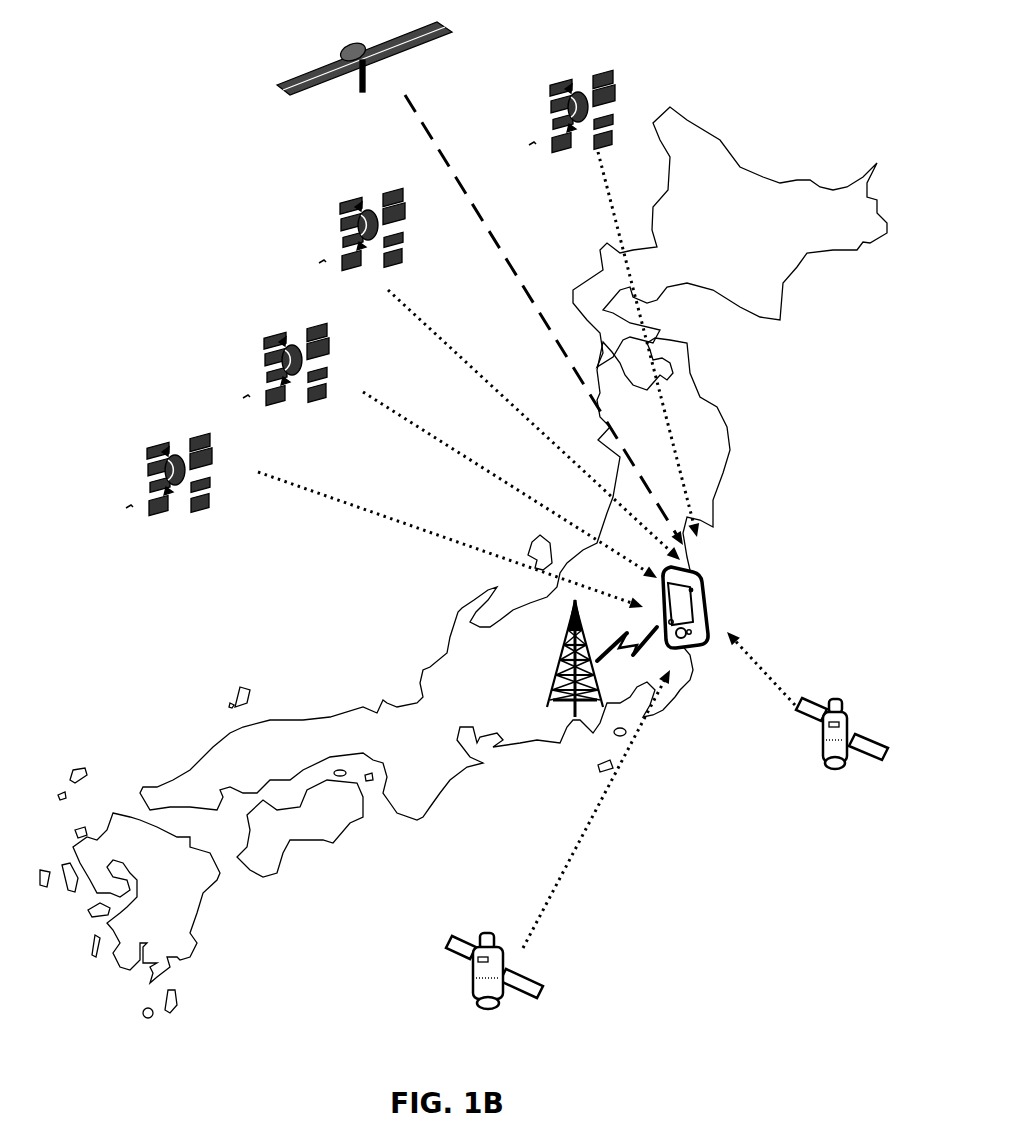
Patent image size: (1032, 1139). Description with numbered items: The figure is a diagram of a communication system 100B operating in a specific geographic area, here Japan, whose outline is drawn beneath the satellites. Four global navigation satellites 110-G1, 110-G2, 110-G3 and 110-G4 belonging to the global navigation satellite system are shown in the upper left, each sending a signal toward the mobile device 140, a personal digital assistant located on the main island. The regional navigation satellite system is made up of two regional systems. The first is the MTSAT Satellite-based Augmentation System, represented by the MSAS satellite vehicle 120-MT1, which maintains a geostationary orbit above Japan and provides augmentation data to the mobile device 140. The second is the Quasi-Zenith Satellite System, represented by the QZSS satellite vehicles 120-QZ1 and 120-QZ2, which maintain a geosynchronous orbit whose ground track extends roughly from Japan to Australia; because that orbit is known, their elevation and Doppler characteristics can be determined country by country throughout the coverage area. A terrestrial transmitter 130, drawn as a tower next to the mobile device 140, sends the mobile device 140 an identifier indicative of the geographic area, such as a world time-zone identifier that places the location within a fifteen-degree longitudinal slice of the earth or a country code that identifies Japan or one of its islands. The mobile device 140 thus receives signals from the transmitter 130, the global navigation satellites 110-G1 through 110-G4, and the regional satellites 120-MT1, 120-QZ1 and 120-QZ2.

The communication system 100B is at (794, 58).
The global navigation satellite 110-G1 is at (560, 88).
The global navigation satellite 110-G2 is at (347, 200).
The global navigation satellite 110-G3 is at (272, 336).
The global navigation satellite 110-G4 is at (155, 440).
The MSAS satellite vehicle 120-MT1 is at (305, 82).
The QZSS satellite vehicle 120-QZ1 is at (470, 982).
The QZSS satellite vehicle 120-QZ2 is at (812, 742).
The transmitter 130 is at (560, 660).
The mobile device 140 is at (700, 578).